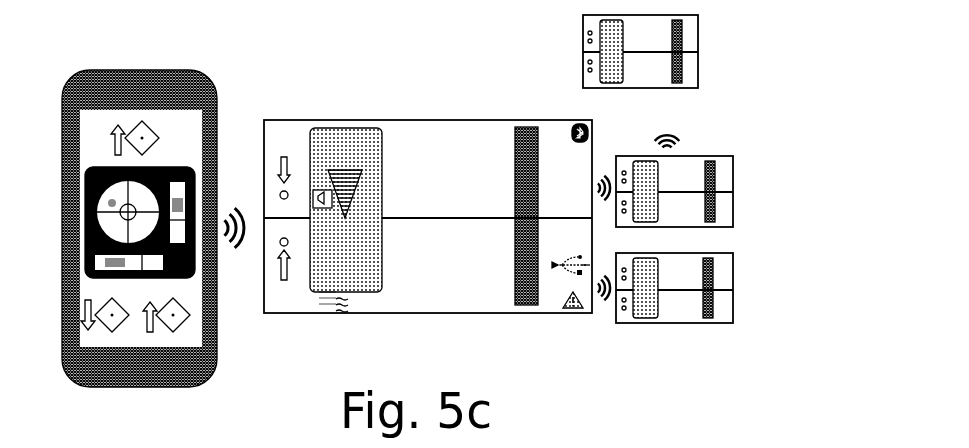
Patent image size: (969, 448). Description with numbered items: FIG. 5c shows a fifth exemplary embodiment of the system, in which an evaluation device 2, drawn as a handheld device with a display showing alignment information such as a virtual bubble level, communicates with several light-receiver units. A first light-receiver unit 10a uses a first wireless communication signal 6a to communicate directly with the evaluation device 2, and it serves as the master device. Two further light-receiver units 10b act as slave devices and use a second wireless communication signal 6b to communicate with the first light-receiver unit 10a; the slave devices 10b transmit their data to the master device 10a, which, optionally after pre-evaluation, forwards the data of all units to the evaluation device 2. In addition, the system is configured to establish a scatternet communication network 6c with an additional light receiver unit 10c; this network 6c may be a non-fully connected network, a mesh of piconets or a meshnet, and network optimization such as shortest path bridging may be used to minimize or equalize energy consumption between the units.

The evaluation device 2 is at (195, 60).
The first wireless communication signal 6a is at (232, 263).
The second wireless communication signal 6b is at (600, 320).
The scatternet communication network 6c is at (710, 125).
The first light-receiver unit 10a is at (408, 110).
The further light-receiver unit 10b is at (760, 208).
The additional light receiver unit 10c is at (712, 45).